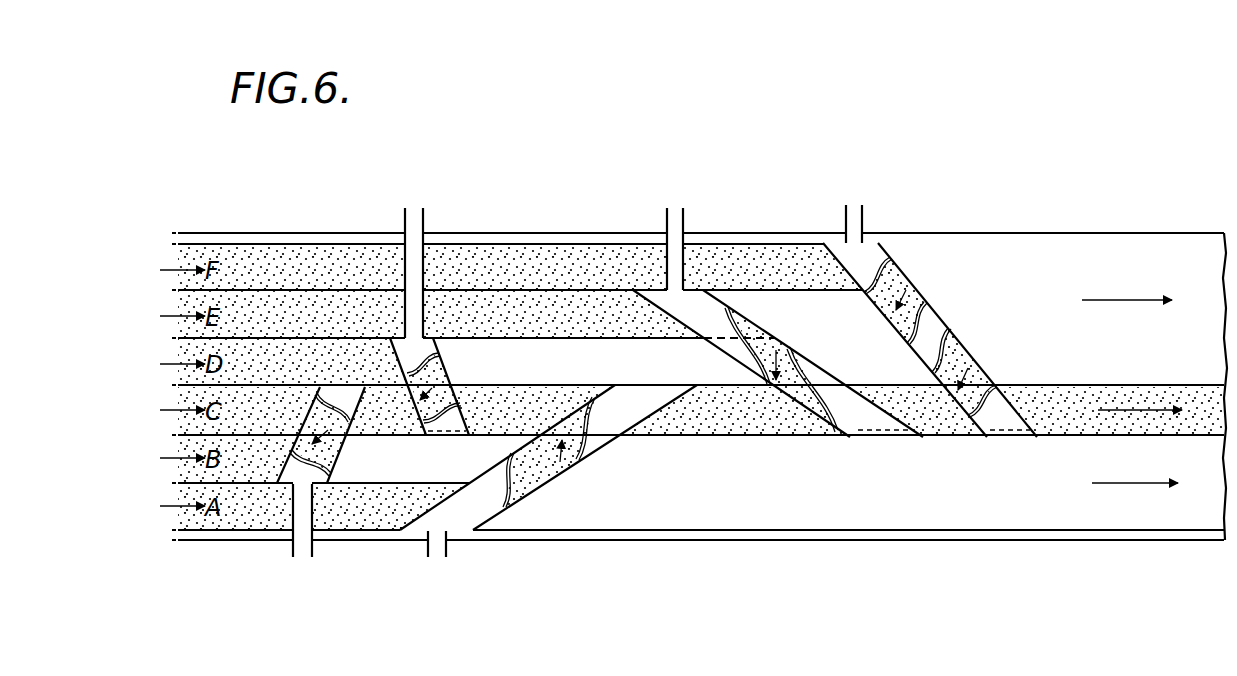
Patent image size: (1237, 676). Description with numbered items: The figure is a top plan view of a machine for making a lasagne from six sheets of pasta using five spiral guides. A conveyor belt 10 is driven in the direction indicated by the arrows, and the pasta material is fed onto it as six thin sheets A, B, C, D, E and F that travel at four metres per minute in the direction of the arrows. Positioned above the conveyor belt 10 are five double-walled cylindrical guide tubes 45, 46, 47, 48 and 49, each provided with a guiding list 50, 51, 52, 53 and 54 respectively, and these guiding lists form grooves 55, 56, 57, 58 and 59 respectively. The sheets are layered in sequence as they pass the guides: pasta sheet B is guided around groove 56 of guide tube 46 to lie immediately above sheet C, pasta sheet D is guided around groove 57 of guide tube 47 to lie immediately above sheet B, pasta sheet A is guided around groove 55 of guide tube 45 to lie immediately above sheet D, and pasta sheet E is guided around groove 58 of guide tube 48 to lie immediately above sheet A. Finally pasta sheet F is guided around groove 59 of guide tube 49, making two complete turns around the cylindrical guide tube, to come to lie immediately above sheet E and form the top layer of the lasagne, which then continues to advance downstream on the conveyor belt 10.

The conveyor belt 10 is at (1123, 247).
The double-walled cylindrical guide tube 45 is at (463, 517).
The double-walled cylindrical guide tube 46 is at (290, 480).
The double-walled cylindrical guide tube 47 is at (413, 353).
The double-walled cylindrical guide tube 48 is at (690, 303).
The double-walled cylindrical guide tube 49 is at (868, 268).
The guiding list 50 is at (580, 450).
The guiding list 51 is at (342, 387).
The guiding list 52 is at (423, 360).
The guiding list 53 is at (822, 372).
The guiding list 54 is at (988, 398).
The groove 55 is at (530, 483).
The groove 56 is at (340, 453).
The groove 57 is at (453, 385).
The groove 58 is at (753, 330).
The groove 59 is at (912, 292).